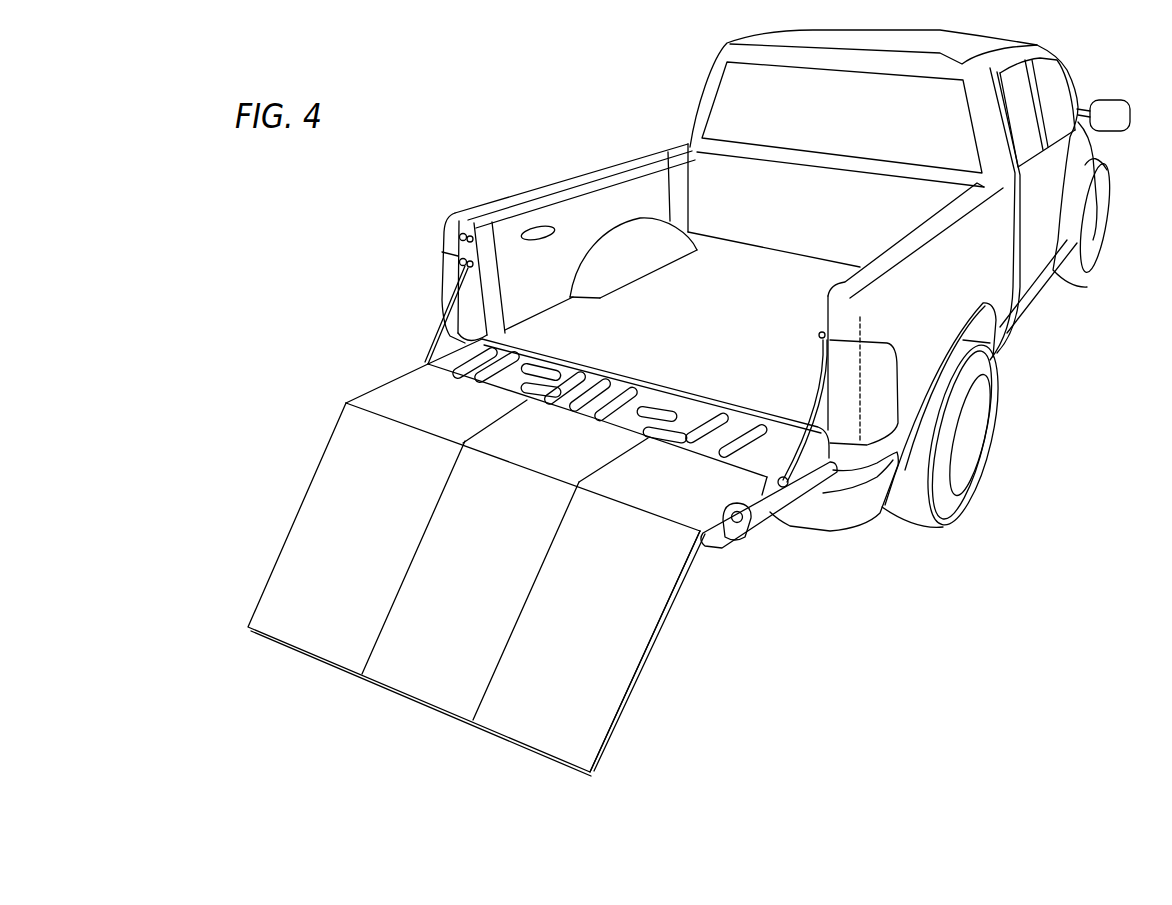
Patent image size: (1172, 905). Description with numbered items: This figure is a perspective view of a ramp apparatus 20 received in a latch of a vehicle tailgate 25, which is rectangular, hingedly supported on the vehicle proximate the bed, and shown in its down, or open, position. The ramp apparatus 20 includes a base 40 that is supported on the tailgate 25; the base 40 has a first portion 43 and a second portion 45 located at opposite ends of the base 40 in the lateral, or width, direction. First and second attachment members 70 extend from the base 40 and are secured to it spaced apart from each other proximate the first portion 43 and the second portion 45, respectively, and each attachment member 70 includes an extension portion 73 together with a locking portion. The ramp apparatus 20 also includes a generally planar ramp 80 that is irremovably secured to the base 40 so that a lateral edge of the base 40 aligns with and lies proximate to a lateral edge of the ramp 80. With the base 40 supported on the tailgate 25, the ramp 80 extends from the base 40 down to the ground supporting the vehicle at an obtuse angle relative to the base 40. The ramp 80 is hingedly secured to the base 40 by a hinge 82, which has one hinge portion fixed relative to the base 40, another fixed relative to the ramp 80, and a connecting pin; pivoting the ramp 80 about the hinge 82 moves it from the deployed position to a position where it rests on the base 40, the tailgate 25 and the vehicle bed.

The ramp apparatus 20 is at (287, 476).
The tailgate 25 is at (727, 538).
The base 40 is at (385, 424).
The first portion 43 is at (413, 387).
The second portion 45 is at (670, 473).
The attachment member 70 is at (741, 522).
The extension portion 73 is at (741, 535).
The ramp 80 is at (590, 690).
The hinge 82 is at (703, 535).